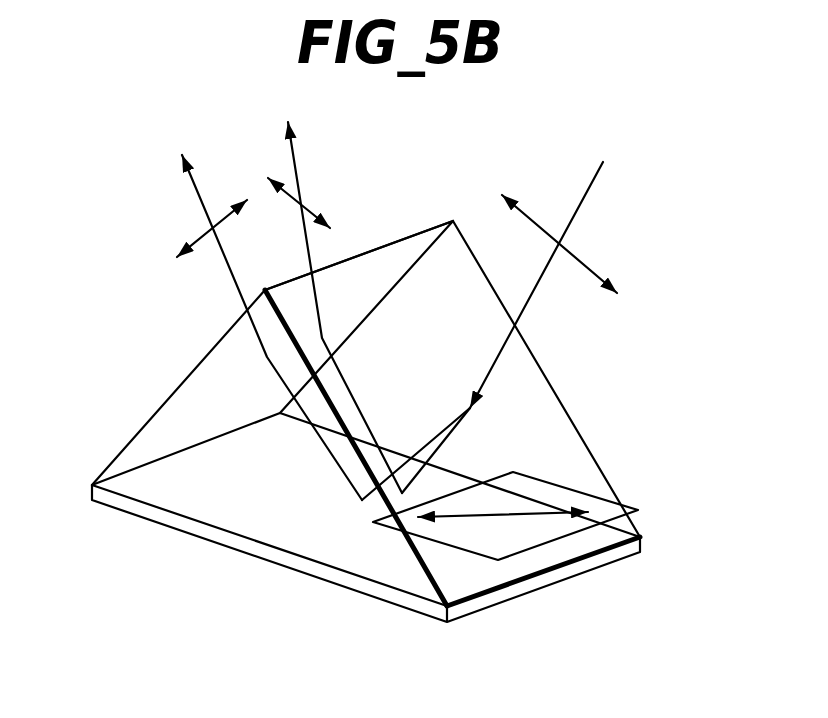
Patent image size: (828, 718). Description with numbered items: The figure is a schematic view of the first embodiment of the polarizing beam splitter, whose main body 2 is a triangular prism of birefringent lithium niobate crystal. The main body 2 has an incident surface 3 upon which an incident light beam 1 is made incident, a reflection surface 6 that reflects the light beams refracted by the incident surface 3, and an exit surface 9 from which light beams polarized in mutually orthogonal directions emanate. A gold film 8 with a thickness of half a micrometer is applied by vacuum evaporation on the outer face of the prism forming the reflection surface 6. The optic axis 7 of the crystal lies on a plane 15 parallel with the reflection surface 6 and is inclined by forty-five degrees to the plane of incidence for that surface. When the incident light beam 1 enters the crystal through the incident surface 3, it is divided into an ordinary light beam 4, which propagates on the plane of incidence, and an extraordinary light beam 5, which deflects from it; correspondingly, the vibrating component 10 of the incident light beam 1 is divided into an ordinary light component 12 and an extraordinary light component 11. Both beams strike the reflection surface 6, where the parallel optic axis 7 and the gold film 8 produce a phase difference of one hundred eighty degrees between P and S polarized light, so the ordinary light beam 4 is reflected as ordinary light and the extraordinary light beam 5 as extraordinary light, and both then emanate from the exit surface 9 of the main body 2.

The incident light beam 1 is at (600, 185).
The main body 2 is at (250, 517).
The incident surface 3 is at (552, 425).
The ordinary light beam 4 is at (404, 467).
The extraordinary light beam 5 is at (443, 445).
The reflection surface 6 is at (478, 578).
The optic axis 7 is at (522, 512).
The gold film 8 is at (377, 595).
The exit surface 9 is at (181, 400).
The vibrating component 10 is at (587, 268).
The extraordinary light component 11 is at (310, 213).
The ordinary light component 12 is at (199, 238).
The plane 15 is at (560, 538).